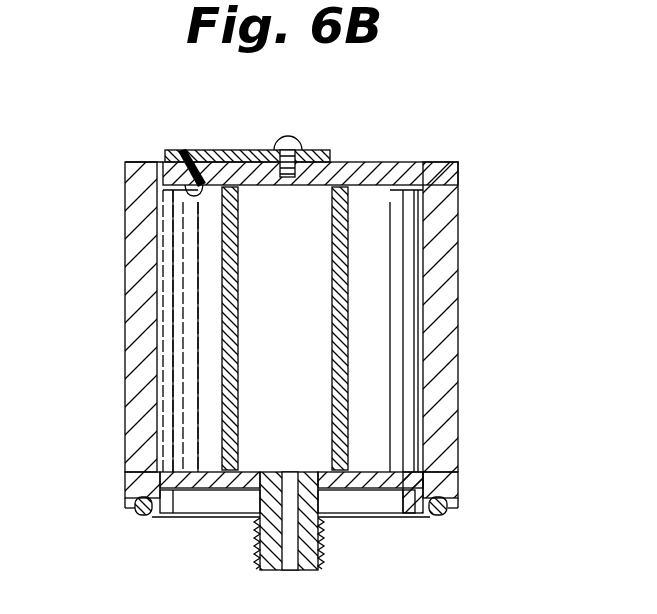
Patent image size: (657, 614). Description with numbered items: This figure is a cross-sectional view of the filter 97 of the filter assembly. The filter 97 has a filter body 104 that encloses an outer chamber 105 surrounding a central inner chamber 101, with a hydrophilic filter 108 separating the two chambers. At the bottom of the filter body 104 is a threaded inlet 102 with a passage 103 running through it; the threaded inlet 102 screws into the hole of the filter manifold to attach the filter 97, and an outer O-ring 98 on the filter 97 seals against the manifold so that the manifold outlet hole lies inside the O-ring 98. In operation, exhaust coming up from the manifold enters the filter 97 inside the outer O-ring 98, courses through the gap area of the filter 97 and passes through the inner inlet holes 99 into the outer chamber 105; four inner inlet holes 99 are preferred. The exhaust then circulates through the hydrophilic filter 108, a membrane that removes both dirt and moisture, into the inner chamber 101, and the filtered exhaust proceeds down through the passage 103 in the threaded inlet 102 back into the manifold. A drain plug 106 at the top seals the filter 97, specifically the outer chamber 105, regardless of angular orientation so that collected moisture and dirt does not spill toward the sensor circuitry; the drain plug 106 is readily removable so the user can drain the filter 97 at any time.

The filter 97 is at (470, 292).
The outer O-ring 98 is at (140, 517).
The inner inlet holes 99 is at (197, 476).
The inner chamber 101 is at (297, 220).
The threaded inlet 102 is at (258, 547).
The passage 103 is at (284, 572).
The filter body 104 is at (460, 385).
The outer chamber 105 is at (175, 305).
The drain plug 106 is at (235, 150).
The hydrophilic filter 108 is at (222, 247).